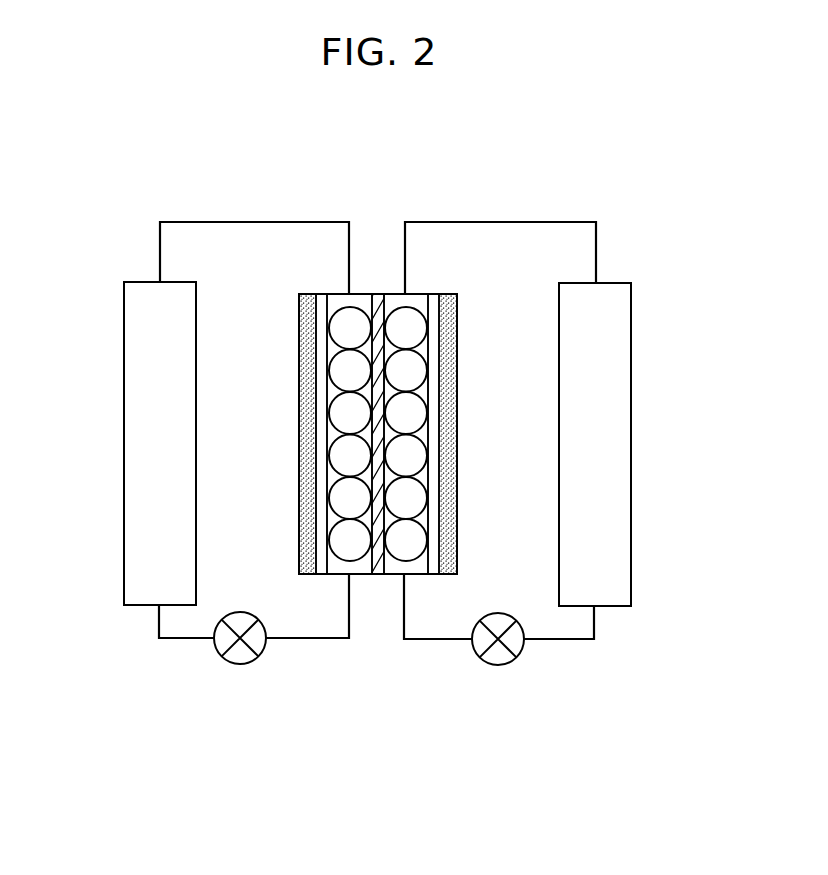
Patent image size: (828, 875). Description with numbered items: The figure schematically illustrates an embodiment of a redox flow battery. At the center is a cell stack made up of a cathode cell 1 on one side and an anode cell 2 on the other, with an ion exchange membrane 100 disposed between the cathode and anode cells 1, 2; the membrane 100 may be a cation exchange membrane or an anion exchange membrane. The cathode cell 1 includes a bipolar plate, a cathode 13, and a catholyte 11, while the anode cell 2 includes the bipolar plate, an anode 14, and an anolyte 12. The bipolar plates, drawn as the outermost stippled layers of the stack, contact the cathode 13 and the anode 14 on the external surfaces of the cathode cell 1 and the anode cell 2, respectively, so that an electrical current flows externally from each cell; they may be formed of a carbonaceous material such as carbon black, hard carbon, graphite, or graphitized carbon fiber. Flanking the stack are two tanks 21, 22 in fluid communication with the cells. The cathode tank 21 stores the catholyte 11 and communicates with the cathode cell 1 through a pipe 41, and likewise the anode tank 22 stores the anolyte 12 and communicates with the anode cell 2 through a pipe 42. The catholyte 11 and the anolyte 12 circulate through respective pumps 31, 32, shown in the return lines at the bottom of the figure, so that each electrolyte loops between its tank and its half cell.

The ion exchange membrane 100 is at (379, 274).
The cathode cell 1 is at (295, 467).
The anode cell 2 is at (458, 467).
The catholyte 11 is at (337, 576).
The anolyte 12 is at (409, 576).
The cathode 13 is at (318, 576).
The anode 14 is at (432, 576).
The cathode tank 21 is at (143, 432).
The anode tank 22 is at (612, 435).
The pump 31 is at (240, 665).
The pump 32 is at (498, 666).
The pipe 41 is at (255, 220).
The pipe 42 is at (500, 222).